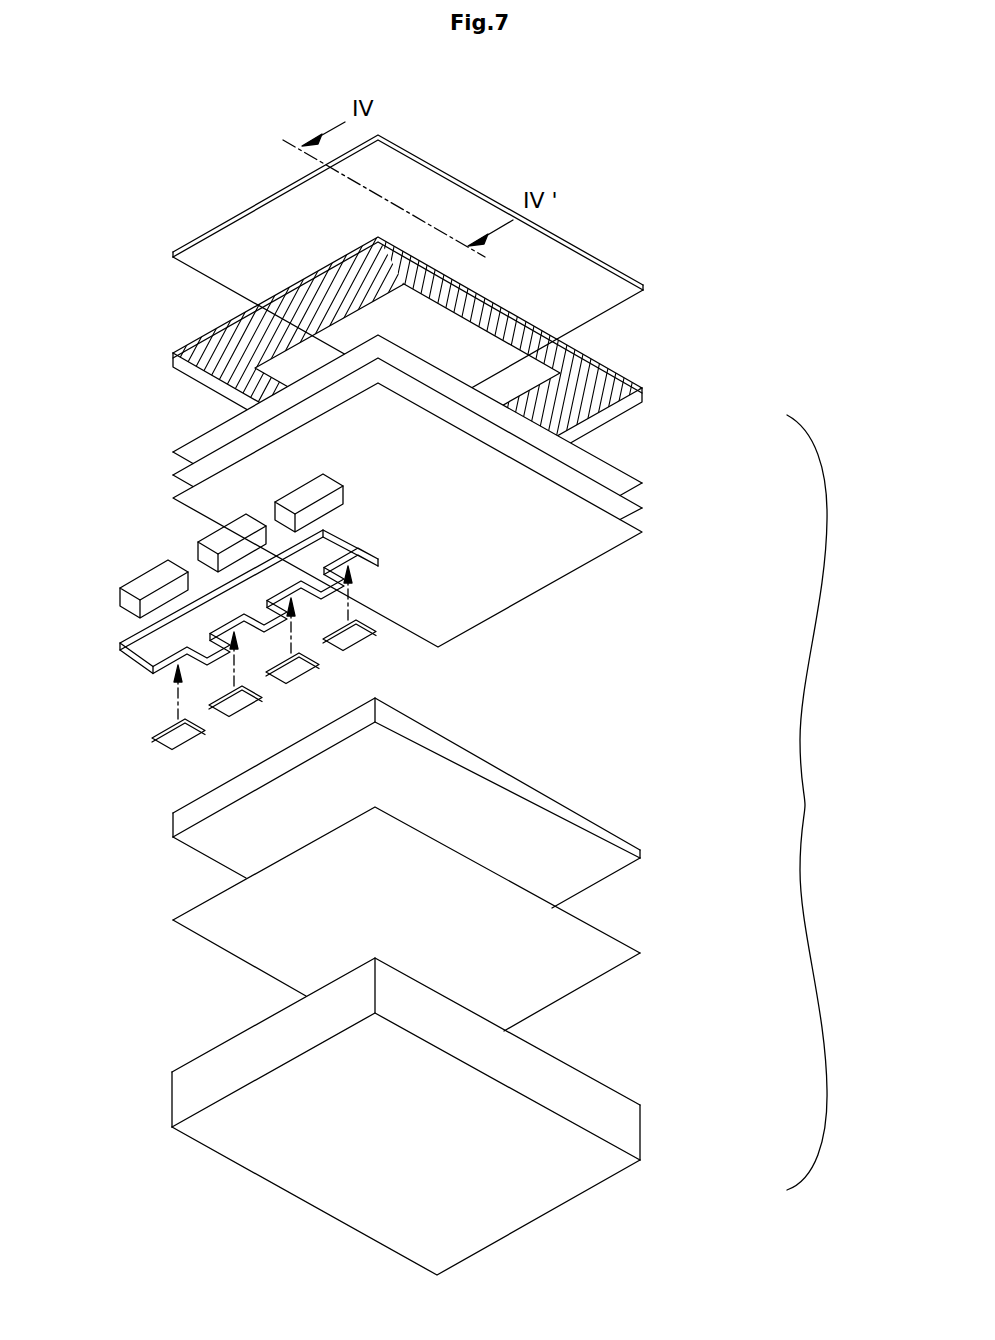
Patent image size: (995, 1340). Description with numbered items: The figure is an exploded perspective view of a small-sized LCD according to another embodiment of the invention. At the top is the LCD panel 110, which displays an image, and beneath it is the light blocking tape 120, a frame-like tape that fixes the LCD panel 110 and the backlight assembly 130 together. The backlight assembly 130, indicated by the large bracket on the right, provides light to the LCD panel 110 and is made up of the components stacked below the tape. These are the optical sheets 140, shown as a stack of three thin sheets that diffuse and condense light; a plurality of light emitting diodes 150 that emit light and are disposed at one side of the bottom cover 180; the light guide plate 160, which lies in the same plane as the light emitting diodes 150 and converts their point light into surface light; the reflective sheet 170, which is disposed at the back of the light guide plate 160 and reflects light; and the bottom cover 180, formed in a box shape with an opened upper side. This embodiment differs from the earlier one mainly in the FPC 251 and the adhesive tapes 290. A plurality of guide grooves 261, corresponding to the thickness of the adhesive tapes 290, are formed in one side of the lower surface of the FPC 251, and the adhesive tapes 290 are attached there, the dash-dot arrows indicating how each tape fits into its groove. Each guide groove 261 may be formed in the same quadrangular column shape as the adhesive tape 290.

The LCD panel 110 is at (612, 289).
The light blocking tape 120 is at (616, 395).
The backlight assembly 130 is at (823, 802).
The optical sheets 140 is at (663, 490).
The light emitting diodes 150 is at (137, 585).
The light guide plate 160 is at (612, 857).
The reflective sheet 170 is at (612, 958).
The bottom cover 180 is at (612, 1162).
The FPC 251 is at (145, 652).
The guide grooves 261 is at (150, 680).
The adhesive tapes 290 is at (170, 748).